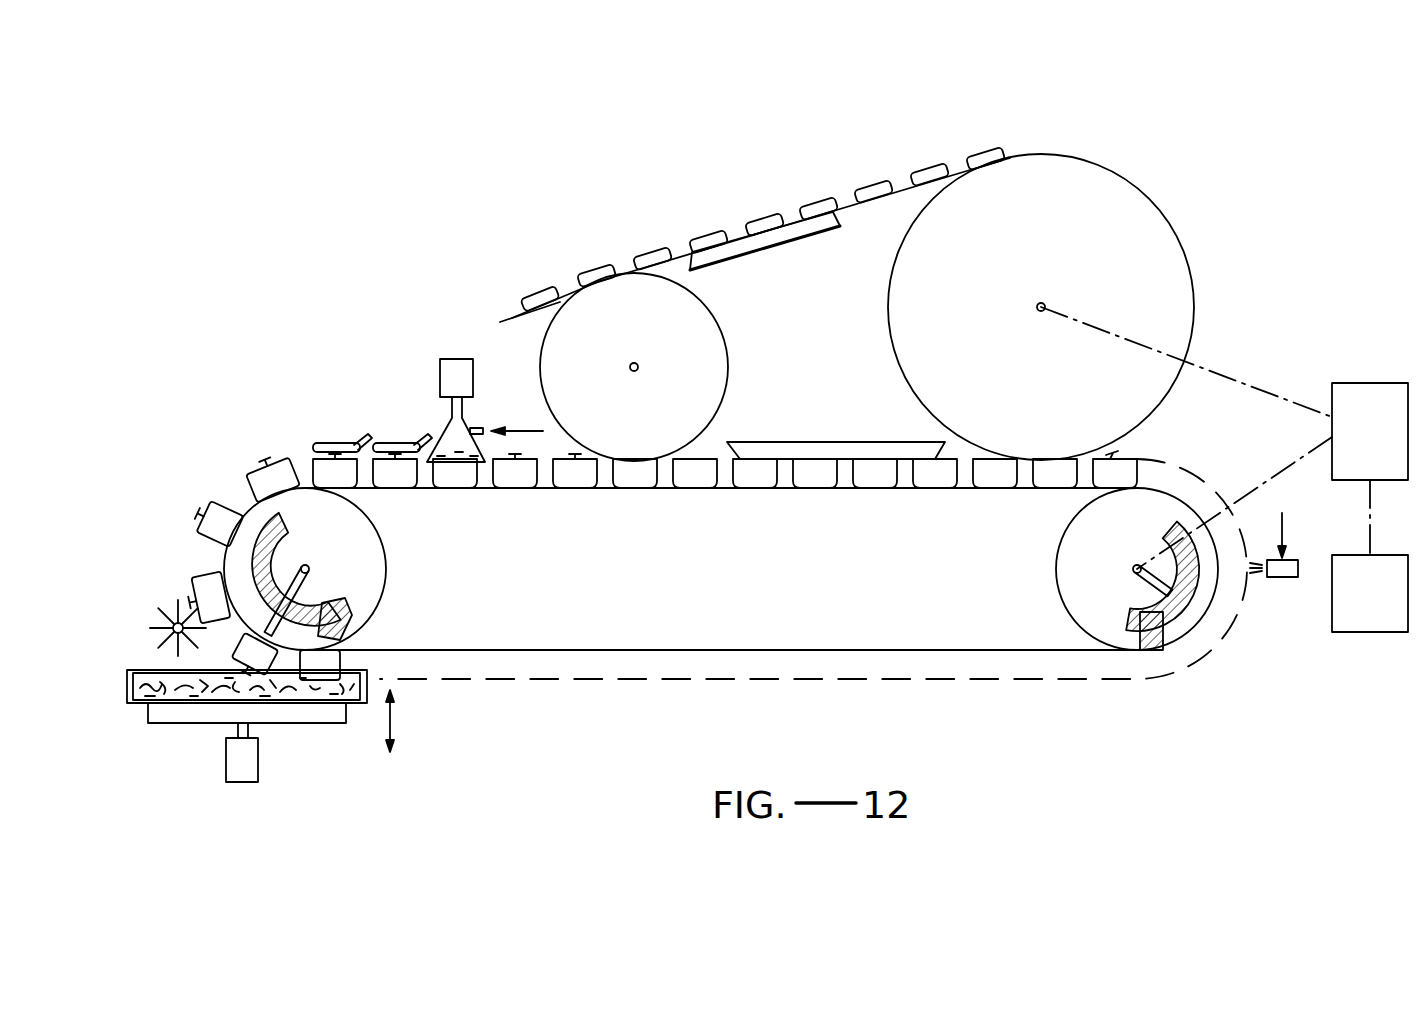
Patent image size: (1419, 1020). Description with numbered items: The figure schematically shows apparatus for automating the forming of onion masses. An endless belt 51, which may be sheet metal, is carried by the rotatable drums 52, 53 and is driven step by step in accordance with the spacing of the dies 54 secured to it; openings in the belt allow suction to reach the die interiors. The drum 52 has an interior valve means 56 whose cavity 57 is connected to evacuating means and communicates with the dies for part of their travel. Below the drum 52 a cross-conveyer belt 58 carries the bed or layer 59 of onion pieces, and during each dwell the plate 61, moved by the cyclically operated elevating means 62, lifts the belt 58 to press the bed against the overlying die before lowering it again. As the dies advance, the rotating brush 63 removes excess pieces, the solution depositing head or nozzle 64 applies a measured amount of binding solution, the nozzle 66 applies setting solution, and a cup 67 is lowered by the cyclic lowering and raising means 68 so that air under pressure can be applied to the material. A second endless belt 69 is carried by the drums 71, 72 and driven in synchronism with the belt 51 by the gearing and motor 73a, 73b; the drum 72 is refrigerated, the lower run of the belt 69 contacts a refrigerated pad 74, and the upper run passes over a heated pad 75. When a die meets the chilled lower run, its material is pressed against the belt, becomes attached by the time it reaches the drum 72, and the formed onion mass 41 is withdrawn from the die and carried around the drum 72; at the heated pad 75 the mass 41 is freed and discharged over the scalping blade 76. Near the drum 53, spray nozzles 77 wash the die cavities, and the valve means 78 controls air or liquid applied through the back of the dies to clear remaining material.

The formed onion mass 41 is at (1120, 460).
The endless belt 51 is at (790, 490).
The drum 52 is at (387, 572).
The drum 53 is at (1060, 563).
The die 54 is at (258, 480).
The valve means 56 is at (268, 556).
The cavity 57 is at (293, 620).
The cross-conveyer belt 58 is at (140, 702).
The bed or layer of onion pieces 59 is at (150, 673).
The plate 61 is at (315, 723).
The elevating means 62 is at (260, 770).
The rotating brush 63 is at (164, 616).
The solution depositing head or nozzle 64 is at (322, 440).
The nozzle 66 is at (398, 440).
The cup 67 is at (470, 424).
The cyclic lowering and raising means 68 is at (473, 379).
The second endless belt 69 is at (912, 192).
The drum 71 is at (722, 352).
The drum 72 is at (890, 343).
The gearing and motor 73a is at (1362, 383).
The gearing and motor 73b is at (1370, 632).
The refrigerated pad 74 is at (820, 442).
The heated pad 75 is at (744, 257).
The scalping blade 76 is at (520, 322).
The spray nozzle 77 is at (1282, 578).
The valve means 78 is at (1190, 615).